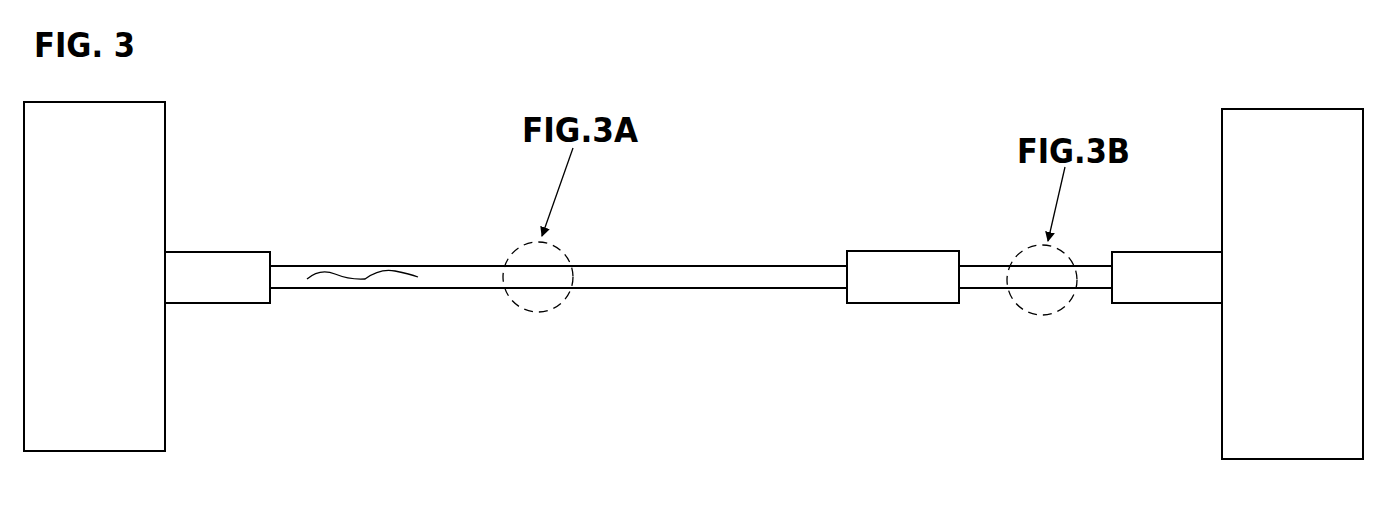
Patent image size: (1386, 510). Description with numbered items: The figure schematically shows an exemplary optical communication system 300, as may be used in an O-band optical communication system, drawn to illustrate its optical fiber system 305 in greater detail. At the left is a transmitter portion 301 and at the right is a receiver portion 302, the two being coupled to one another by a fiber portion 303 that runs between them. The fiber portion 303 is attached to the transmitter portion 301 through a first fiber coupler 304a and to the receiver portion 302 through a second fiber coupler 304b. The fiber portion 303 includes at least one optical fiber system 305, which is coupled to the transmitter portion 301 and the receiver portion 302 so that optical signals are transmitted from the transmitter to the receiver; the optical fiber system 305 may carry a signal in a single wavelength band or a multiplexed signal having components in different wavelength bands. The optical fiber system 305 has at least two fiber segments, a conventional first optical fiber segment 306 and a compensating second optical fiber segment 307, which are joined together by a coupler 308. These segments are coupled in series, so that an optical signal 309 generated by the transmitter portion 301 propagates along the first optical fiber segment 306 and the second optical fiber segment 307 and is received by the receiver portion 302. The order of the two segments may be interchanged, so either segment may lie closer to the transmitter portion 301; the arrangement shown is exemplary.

The optical communication system 300 is at (1088, 84).
The transmitter portion 301 is at (112, 102).
The receiver portion 302 is at (1287, 109).
The fiber portion 303 is at (428, 154).
The first fiber coupler 304a is at (228, 272).
The second fiber coupler 304b is at (1165, 275).
The optical fiber system 305 is at (702, 203).
The first optical fiber segment 306 is at (603, 277).
The second optical fiber segment 307 is at (990, 270).
The coupler 308 is at (902, 270).
The optical signal 309 is at (352, 277).